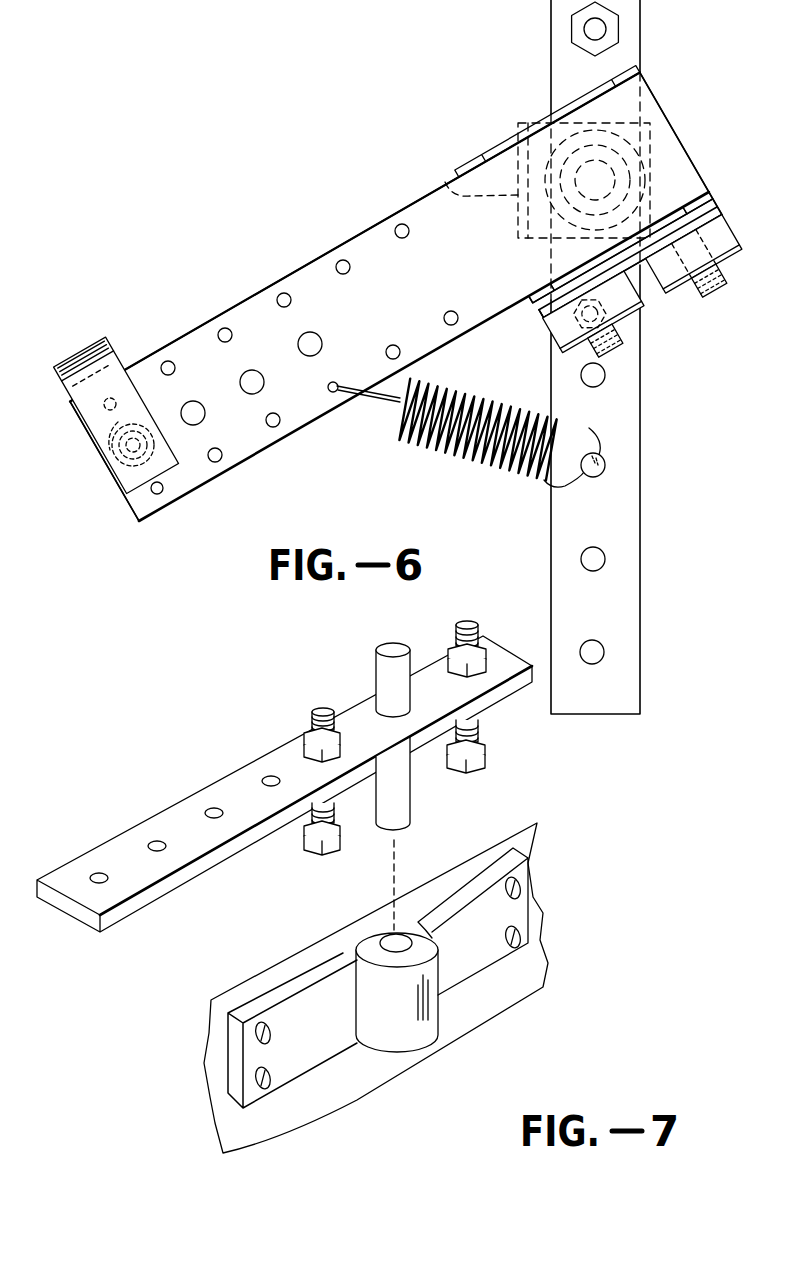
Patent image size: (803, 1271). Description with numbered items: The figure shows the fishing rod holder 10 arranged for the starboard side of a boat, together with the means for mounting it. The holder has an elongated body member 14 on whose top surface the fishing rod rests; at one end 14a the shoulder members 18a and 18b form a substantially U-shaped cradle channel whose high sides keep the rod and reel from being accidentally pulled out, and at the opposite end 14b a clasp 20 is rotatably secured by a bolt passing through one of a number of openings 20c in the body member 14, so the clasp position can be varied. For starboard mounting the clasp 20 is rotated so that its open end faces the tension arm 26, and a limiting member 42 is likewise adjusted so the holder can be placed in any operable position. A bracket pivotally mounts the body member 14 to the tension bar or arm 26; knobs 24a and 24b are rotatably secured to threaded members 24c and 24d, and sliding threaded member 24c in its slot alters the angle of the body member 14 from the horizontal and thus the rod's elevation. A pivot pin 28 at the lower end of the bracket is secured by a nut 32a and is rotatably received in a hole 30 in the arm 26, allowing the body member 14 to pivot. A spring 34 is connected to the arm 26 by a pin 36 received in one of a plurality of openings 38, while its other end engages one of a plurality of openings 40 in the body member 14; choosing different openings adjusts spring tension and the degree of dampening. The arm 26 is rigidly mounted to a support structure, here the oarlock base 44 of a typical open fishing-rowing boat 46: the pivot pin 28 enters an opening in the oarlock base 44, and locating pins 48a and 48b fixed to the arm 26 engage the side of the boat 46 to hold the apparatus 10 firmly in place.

In FIG. 6, the rod holder 10 is at (371, 145).
In FIG. 6, the body member 14 is at (373, 230).
In FIG. 6, the end of body member 14a is at (688, 163).
In FIG. 6, the end of body member 14b is at (166, 508).
In FIG. 6, the shoulder member 18a is at (498, 148).
In FIG. 6, the shoulder member 18b is at (705, 202).
In FIG. 6, the clasp 20 is at (110, 342).
In FIG. 6, the opening 20c is at (319, 338).
In FIG. 6, the knob 24a is at (641, 336).
In FIG. 6, the knob 24b is at (735, 245).
In FIG. 6, the threaded member 24c is at (622, 347).
In FIG. 6, the threaded member 24d is at (714, 290).
In FIG. 6, the tension bar or arm 26 is at (628, 437).
In FIG. 7, the tension bar or arm 26 is at (253, 773).
In FIG. 7, the pivot pin 28 is at (402, 807).
In FIG. 7, the hole 30 is at (377, 715).
In FIG. 6, the nut 32a is at (650, 136).
In FIG. 6, the spring 34 is at (478, 462).
In FIG. 6, the pin 36 is at (601, 461).
In FIG. 6, the opening 38 is at (605, 378).
In FIG. 7, the opening 38 is at (96, 870).
In FIG. 6, the opening 40 is at (284, 293).
In FIG. 6, the limiting member 42 is at (445, 184).
In FIG. 7, the oarlock base 44 is at (393, 937).
In FIG. 7, the boat 46 is at (360, 1078).
In FIG. 7, the locating pin 48a is at (318, 820).
In FIG. 7, the locating pin 48b is at (472, 730).